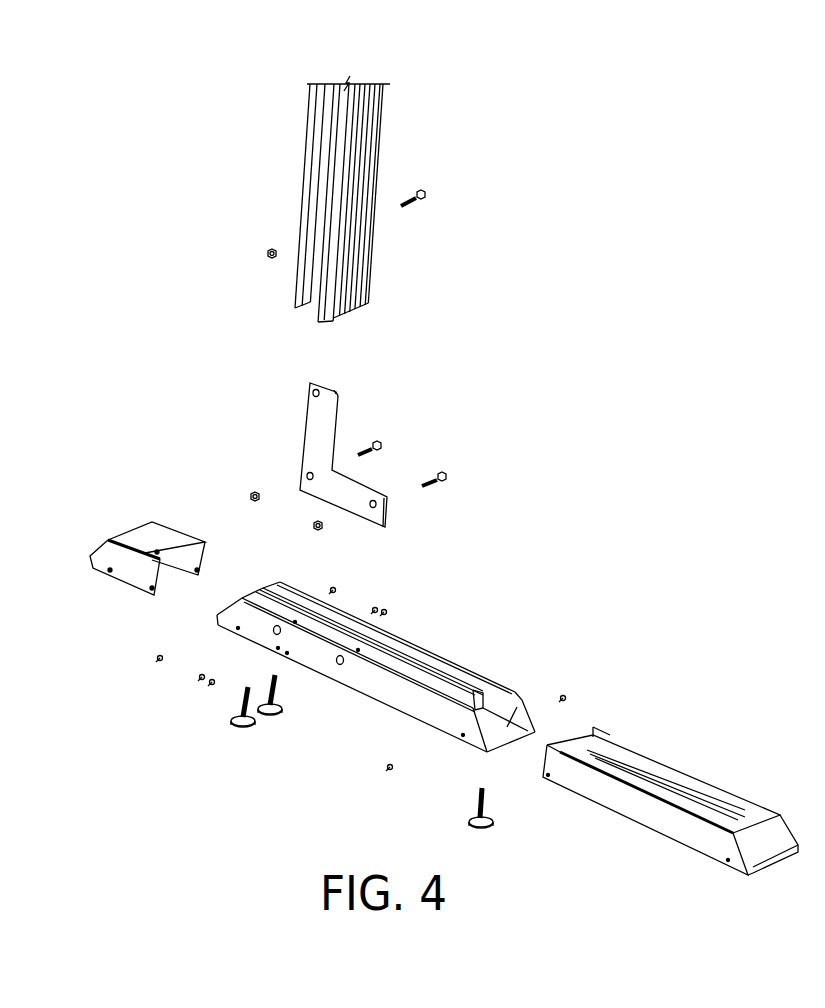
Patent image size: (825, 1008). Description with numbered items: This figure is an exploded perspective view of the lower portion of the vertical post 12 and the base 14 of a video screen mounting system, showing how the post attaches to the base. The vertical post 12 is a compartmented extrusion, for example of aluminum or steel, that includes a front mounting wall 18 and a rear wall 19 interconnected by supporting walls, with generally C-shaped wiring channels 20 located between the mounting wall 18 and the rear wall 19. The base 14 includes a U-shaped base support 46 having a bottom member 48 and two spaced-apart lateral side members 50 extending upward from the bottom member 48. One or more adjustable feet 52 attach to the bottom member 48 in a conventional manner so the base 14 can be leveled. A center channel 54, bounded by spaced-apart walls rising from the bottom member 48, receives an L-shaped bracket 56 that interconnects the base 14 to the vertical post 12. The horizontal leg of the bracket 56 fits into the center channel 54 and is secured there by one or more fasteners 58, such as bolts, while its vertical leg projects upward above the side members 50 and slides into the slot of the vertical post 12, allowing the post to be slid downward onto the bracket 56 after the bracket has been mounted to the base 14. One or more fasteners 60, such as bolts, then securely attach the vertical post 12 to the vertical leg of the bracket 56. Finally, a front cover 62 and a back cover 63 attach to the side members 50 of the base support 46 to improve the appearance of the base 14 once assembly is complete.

The vertical post 12 is at (348, 199).
The base 14 is at (420, 693).
The front mounting wall 18 is at (362, 272).
The rear wall 19 is at (300, 195).
The wiring channel 20 is at (310, 287).
The U-shaped base support 46 is at (468, 670).
The bottom member 48 is at (498, 748).
The lateral side member 50 is at (520, 707).
The adjustable foot 52 is at (248, 728).
The center channel 54 is at (383, 650).
The bracket 56 is at (323, 407).
The fastener 58 is at (383, 448).
The fastener 60 is at (427, 199).
The front cover 62 is at (687, 778).
The back cover 63 is at (157, 535).